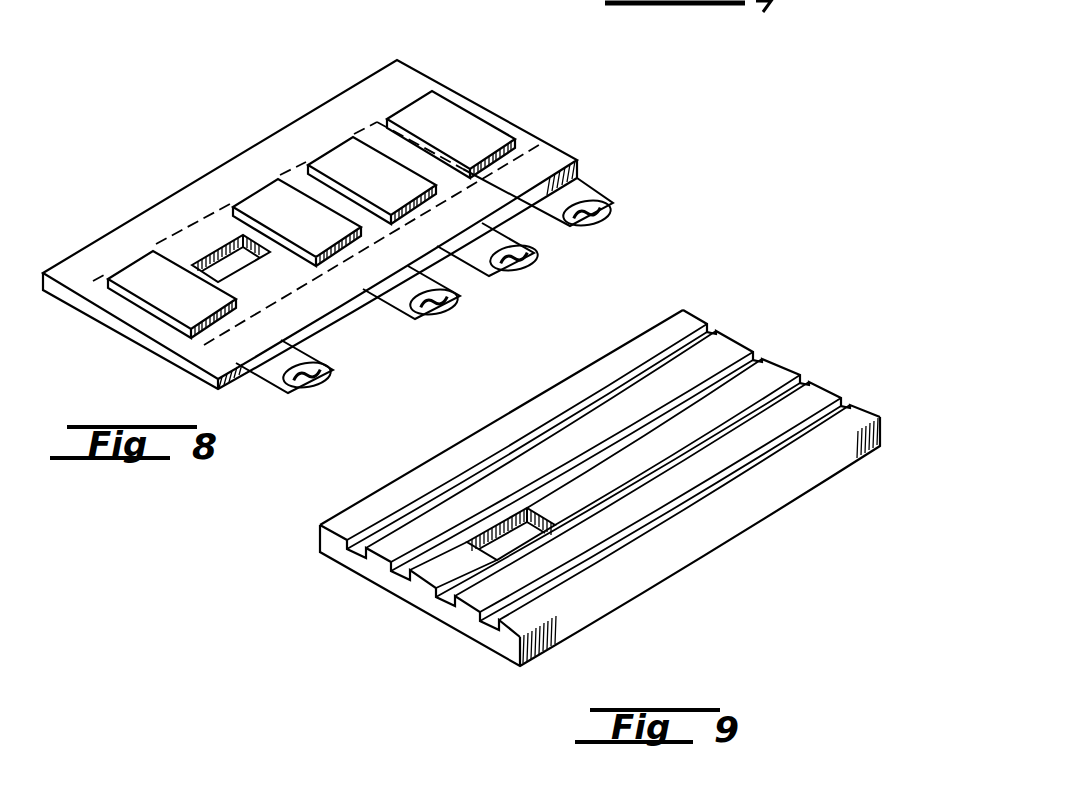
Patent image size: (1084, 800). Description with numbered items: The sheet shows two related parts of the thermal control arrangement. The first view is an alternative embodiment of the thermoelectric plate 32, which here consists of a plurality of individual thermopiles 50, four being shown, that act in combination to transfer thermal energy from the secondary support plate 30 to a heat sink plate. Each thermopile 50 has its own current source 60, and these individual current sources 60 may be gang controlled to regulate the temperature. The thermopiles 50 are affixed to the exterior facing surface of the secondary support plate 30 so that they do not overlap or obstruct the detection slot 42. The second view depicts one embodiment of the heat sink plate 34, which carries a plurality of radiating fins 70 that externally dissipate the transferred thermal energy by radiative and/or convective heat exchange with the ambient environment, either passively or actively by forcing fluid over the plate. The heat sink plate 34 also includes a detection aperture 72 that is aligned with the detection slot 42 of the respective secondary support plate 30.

In FIG. 8, the secondary support plate 30 is at (173, 210).
In FIG. 8, the thermoelectric plate 32 is at (375, 120).
In FIG. 8, the detection slot 42 is at (236, 262).
In FIG. 8, the thermopile 50 is at (148, 272).
In FIG. 8, the current source 60 is at (611, 214).
In FIG. 9, the heat sink plate 34 is at (760, 543).
In FIG. 9, the radiating fin 70 is at (745, 341).
In FIG. 9, the detection aperture 72 is at (508, 553).